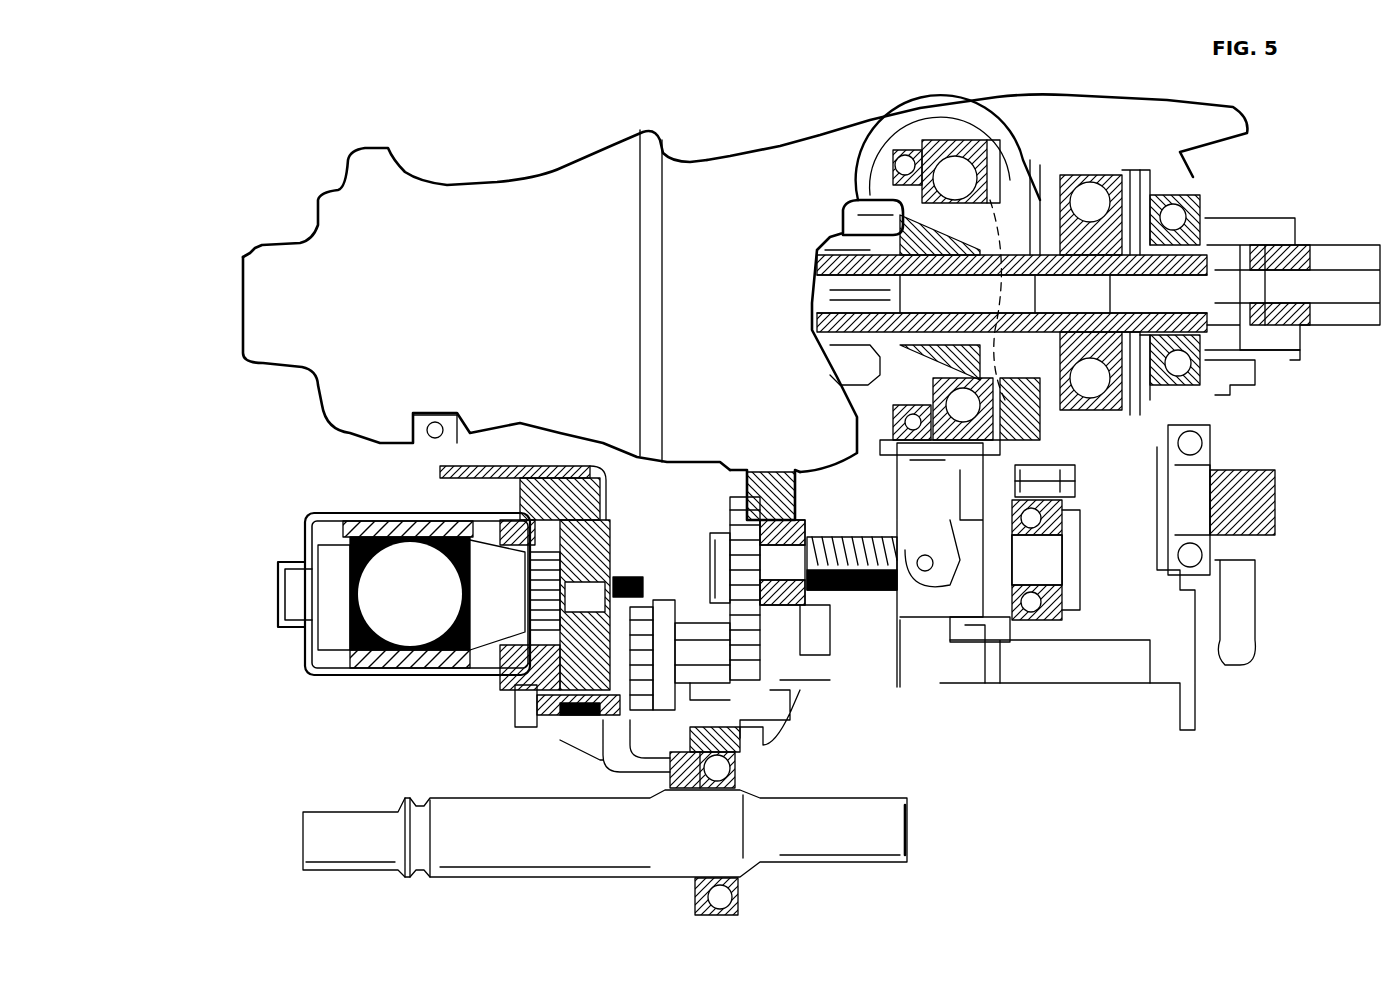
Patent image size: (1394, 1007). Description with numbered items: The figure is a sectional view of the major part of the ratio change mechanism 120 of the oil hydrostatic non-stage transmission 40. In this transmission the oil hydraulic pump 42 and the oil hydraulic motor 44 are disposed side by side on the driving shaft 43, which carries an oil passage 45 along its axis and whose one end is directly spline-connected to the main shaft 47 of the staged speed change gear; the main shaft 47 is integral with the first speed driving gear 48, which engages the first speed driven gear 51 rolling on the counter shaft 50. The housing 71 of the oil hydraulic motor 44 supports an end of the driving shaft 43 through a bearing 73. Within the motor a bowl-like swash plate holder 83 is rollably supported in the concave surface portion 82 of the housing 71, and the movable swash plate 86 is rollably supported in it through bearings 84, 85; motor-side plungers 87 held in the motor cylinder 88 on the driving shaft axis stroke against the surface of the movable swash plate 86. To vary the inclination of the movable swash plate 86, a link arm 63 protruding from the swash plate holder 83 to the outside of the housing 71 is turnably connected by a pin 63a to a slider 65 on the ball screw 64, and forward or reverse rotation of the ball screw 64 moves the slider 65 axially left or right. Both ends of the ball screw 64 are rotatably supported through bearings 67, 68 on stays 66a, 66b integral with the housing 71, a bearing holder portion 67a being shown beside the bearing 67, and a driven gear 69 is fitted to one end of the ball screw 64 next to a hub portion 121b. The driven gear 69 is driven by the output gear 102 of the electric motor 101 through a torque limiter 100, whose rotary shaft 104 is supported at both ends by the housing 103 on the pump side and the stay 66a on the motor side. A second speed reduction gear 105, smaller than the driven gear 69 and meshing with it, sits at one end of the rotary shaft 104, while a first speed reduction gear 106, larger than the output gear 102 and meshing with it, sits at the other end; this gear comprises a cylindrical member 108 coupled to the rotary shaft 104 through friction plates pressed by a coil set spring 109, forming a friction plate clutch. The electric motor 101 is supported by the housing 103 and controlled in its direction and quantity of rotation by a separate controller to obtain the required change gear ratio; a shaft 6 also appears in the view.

The steering shaft 6 is at (905, 822).
The oil hydrostatic non-stage transmission 40 is at (266, 197).
The oil hydraulic pump 42 is at (522, 300).
The driving shaft 43 is at (930, 265).
The oil hydraulic motor 44 is at (725, 300).
The oil passage 45 is at (1080, 303).
The main shaft 47 is at (1288, 255).
The first speed driving gear 48 is at (1283, 355).
The counter shaft 50 is at (1268, 510).
The first speed driven gear 51 is at (1233, 392).
The link arm 63 is at (898, 520).
The pin 63a is at (900, 625).
The ball screw 64 is at (866, 595).
The slider 65 is at (940, 625).
The stay 66a is at (810, 660).
The stay 66b is at (1040, 700).
The bearing 67 is at (805, 525).
The bearing holder 67a is at (747, 470).
The bearing 68 is at (1062, 520).
The driven gear 69 is at (735, 510).
The housing 71 is at (1053, 443).
The bearing 73 is at (1090, 195).
The concave surface portion 82 is at (1040, 215).
The swash plate holder 83 is at (1035, 378).
The bearing 84 is at (880, 443).
The bearing 85 is at (985, 400).
The movable swash plate 86 is at (875, 420).
The motor-side plunger 87 is at (860, 213).
The motor cylinder 88 is at (825, 250).
The torque limiter 100 is at (466, 760).
The electric motor 101 is at (345, 680).
The output gear 102 is at (632, 575).
The housing 103 is at (595, 470).
The rotary shaft 104 is at (690, 690).
The second speed reduction gear 105 is at (758, 745).
The first speed reduction gear 106 is at (610, 770).
The cylindrical member 108 is at (670, 715).
The set spring 109 is at (700, 623).
The ratio change mechanism 120 is at (968, 627).
The hub 121b is at (712, 540).